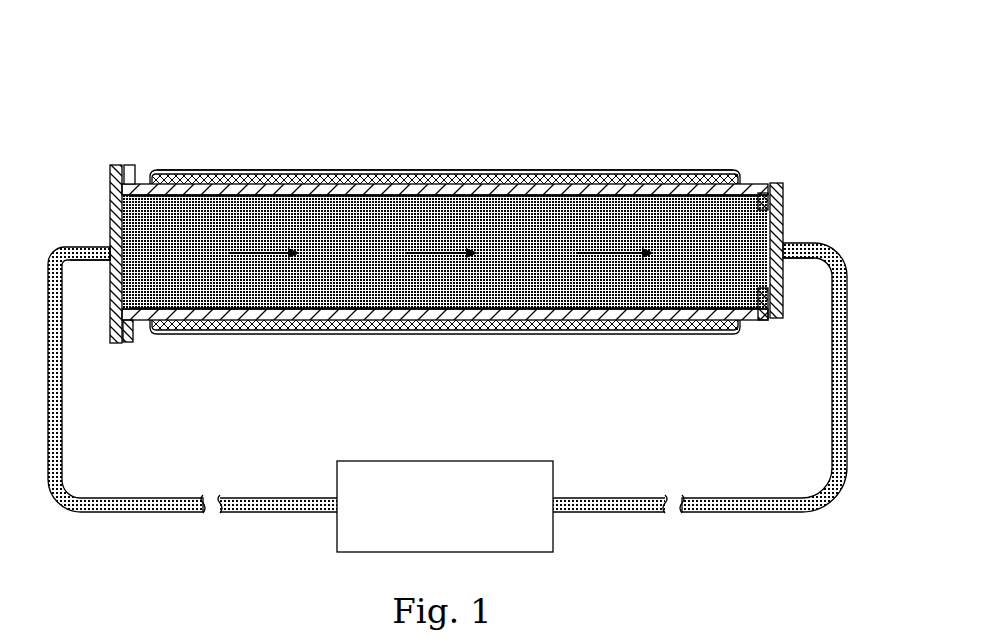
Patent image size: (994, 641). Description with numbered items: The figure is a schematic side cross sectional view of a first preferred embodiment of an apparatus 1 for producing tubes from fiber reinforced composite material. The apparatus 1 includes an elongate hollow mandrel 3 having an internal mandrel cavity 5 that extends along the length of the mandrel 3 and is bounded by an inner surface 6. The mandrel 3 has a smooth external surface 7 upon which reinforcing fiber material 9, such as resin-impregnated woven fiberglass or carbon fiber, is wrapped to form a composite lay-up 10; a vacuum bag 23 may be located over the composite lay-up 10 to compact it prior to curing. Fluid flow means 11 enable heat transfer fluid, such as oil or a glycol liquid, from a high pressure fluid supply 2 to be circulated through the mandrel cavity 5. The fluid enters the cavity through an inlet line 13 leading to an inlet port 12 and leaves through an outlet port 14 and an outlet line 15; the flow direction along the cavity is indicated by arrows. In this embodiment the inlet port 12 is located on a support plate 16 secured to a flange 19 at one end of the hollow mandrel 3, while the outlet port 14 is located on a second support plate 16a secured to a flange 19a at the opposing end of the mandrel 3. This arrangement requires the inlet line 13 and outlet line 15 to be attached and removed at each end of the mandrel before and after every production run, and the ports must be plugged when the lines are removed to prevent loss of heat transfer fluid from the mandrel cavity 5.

The apparatus 1 is at (446, 283).
The high pressure fluid supply 2 is at (437, 519).
The elongate hollow mandrel 3 is at (445, 213).
The mandrel cavity 5 is at (533, 270).
The inner surface of mandrel cavity 6 is at (450, 205).
The external surface 7 is at (144, 180).
The reinforcing fiber material 9 is at (353, 170).
The composite lay-up 10 is at (401, 168).
The fluid flow means 11 is at (81, 205).
The inlet port 12 is at (97, 262).
The inlet line 13 is at (111, 316).
The outlet port 14 is at (787, 260).
The outlet line 15 is at (778, 359).
The support plate 16 is at (112, 175).
The second support plate 16a is at (781, 193).
The flange 19 is at (128, 165).
The flange 19a is at (739, 197).
The vacuum bag 23 is at (537, 171).